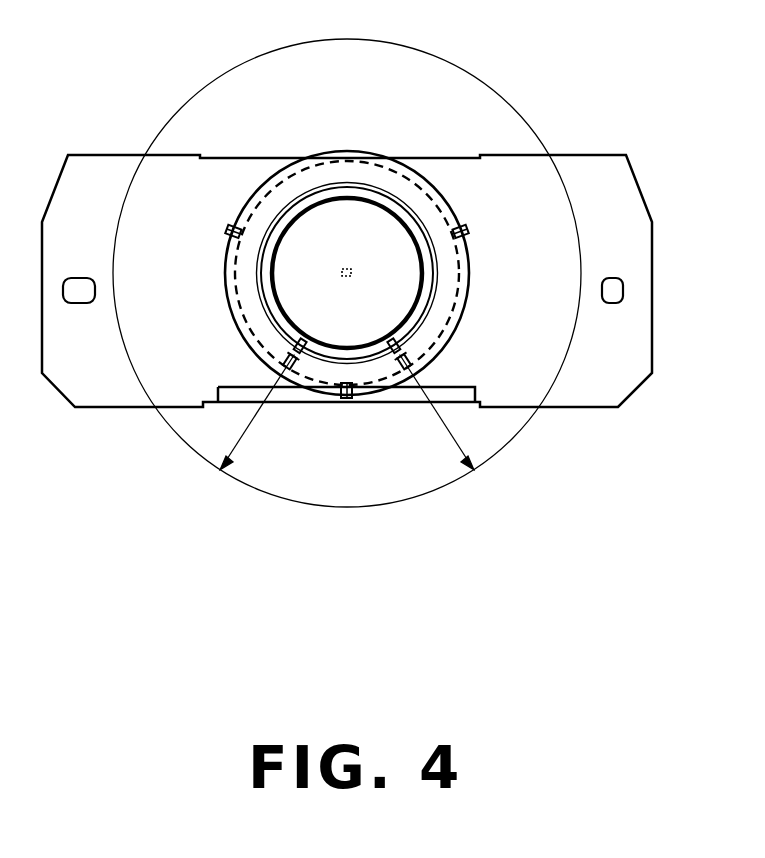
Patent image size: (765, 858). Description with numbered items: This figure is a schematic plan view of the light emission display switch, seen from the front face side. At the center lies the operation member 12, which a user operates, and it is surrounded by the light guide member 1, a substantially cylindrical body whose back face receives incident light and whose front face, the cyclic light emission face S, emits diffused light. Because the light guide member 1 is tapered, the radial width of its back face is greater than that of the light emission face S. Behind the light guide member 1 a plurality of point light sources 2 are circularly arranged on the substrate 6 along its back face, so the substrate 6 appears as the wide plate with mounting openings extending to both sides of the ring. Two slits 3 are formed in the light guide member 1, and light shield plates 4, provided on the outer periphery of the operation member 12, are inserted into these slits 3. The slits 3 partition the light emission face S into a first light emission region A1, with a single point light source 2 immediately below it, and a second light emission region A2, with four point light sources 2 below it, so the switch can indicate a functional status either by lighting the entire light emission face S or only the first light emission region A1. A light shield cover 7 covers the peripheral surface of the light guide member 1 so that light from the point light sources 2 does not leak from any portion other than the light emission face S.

The light guide member 1 is at (367, 183).
The point light sources 2 is at (221, 284).
The slits 3 is at (302, 350).
The light shield plates 4 is at (290, 368).
The substrate 6 is at (595, 163).
The light shield cover 7 is at (306, 160).
The operation member 12 is at (343, 215).
The light emission face S is at (396, 176).
The first light emission region A1 is at (347, 448).
The second light emission region A2 is at (346, 24).